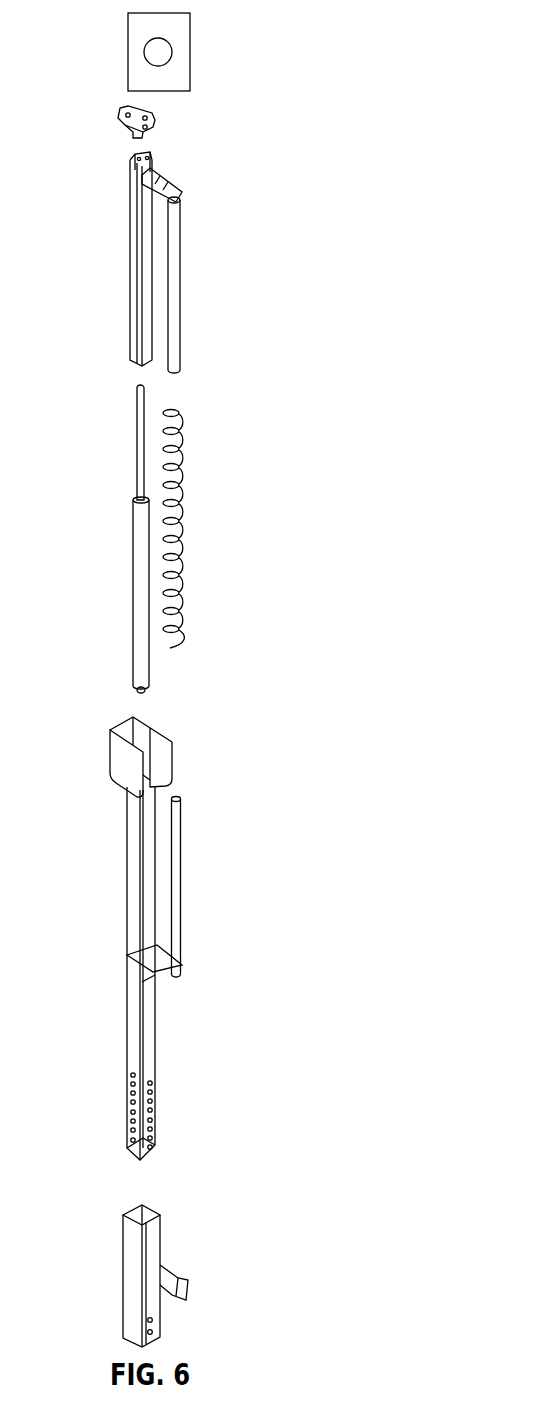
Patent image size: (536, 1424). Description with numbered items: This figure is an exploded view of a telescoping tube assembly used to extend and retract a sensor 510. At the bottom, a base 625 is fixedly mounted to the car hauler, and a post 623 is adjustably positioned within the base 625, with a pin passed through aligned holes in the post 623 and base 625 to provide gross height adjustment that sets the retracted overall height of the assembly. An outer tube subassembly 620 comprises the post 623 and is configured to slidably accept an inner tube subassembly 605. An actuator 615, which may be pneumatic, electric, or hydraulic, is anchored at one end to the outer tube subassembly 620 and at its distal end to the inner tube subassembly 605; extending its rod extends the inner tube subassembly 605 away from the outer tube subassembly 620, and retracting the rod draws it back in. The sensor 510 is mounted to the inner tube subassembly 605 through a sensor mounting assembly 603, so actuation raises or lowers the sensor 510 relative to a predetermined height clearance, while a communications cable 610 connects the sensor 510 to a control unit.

The sensor 510 is at (190, 52).
The sensor mounting assembly 603 is at (160, 122).
The inner tube subassembly 605 is at (130, 278).
The communications cable 610 is at (186, 530).
The actuator 615 is at (134, 597).
The outer tube subassembly 620 is at (145, 938).
The post 623 is at (157, 1060).
The base 625 is at (157, 1250).